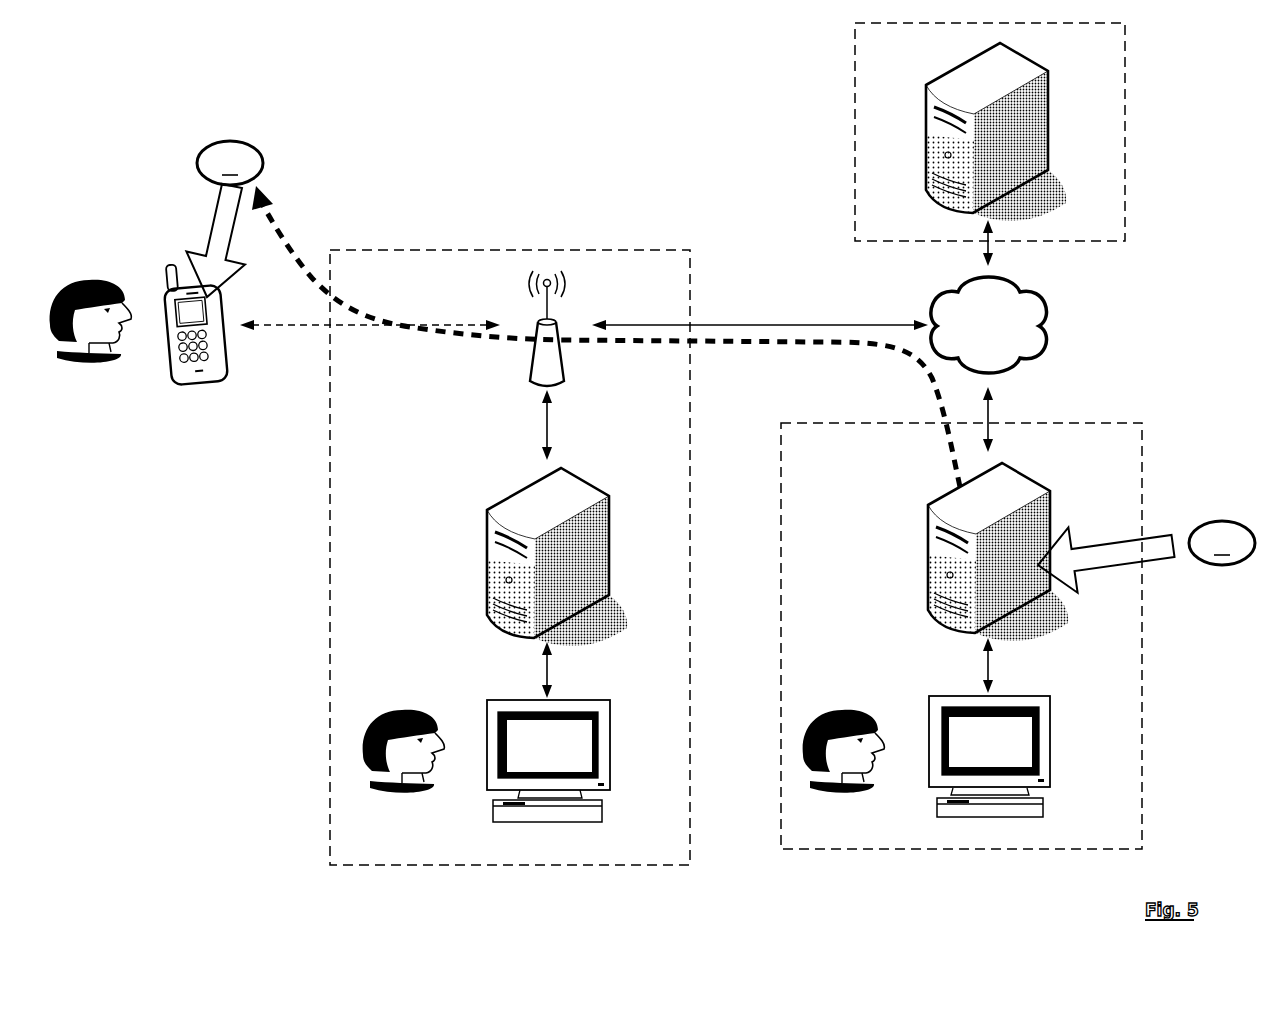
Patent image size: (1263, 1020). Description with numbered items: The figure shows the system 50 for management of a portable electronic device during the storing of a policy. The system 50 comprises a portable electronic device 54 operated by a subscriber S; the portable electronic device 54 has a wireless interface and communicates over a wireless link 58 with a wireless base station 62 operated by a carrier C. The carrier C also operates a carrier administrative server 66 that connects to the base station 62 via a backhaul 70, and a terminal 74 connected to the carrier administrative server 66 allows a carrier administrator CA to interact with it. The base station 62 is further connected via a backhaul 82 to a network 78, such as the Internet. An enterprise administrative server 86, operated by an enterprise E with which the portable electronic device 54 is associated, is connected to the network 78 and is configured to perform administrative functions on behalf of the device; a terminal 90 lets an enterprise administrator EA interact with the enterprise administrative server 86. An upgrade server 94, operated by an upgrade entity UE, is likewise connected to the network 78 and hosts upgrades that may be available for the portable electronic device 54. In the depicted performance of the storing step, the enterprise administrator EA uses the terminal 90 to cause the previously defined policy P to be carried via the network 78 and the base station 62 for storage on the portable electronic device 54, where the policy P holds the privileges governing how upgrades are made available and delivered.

The system 50 is at (148, 775).
The portable electronic device 54 is at (195, 395).
The wireless link 58 is at (423, 327).
The wireless base station 62 is at (529, 358).
The carrier administrative server 66 is at (477, 547).
The backhaul 70 is at (543, 417).
The terminal 74 is at (531, 754).
The network 78 is at (973, 340).
The backhaul 82 is at (793, 327).
The enterprise administrative server 86 is at (915, 548).
The terminal 90 is at (974, 750).
The upgrade server 94 is at (927, 135).
The subscriber S is at (91, 339).
The carrier administrator CA is at (404, 769).
The enterprise administrator EA is at (844, 769).
The carrier C is at (328, 627).
The enterprise E is at (780, 638).
The upgrade entity UE is at (853, 83).
The policy P is at (720, 367).